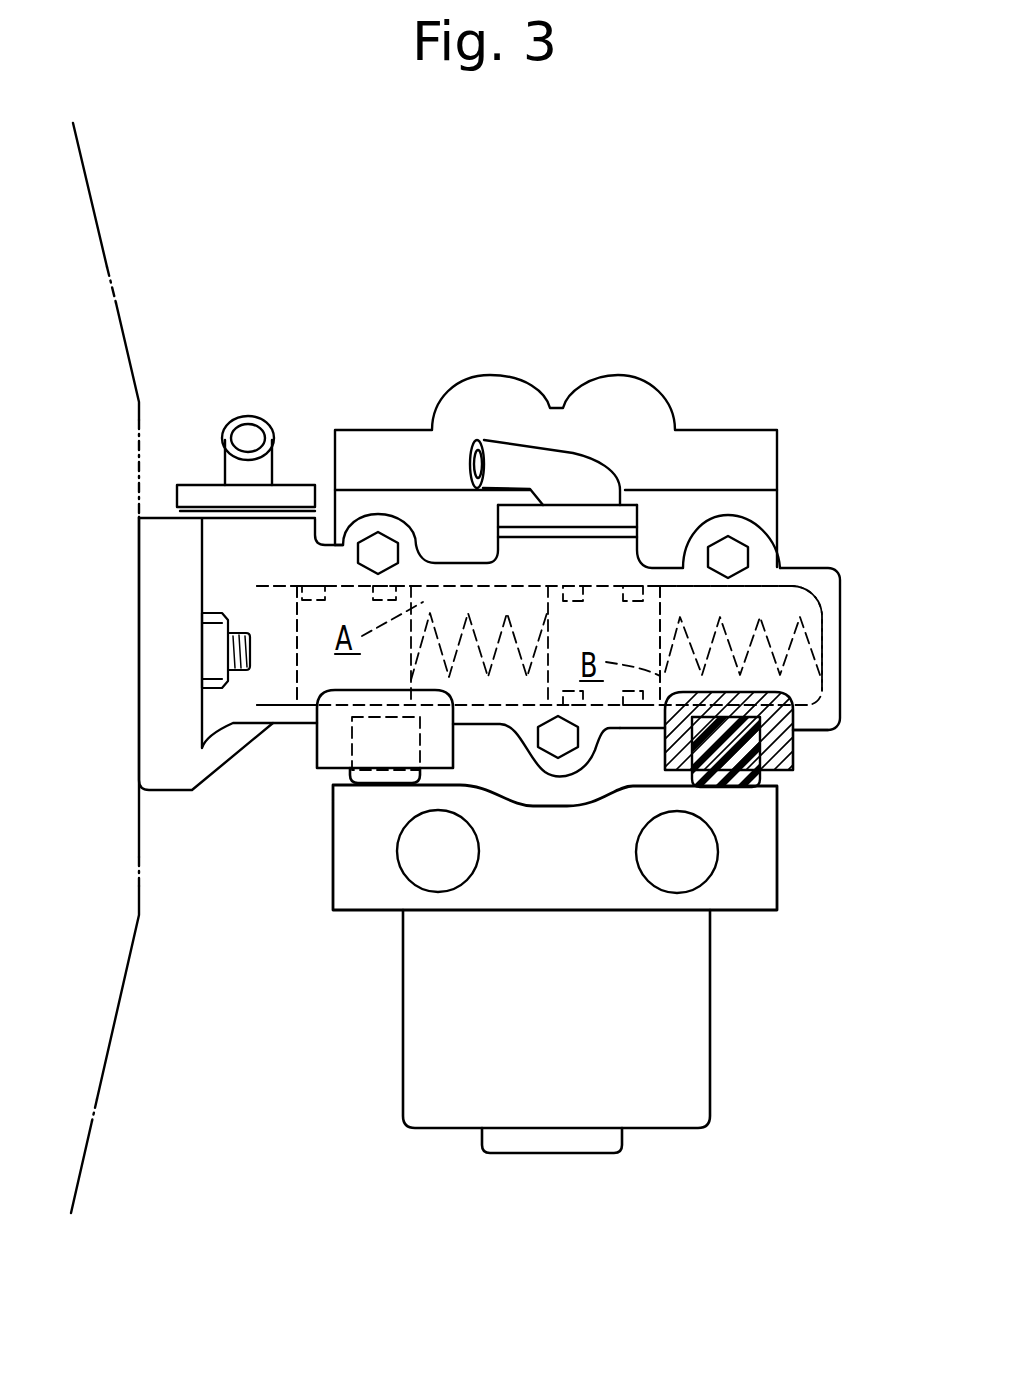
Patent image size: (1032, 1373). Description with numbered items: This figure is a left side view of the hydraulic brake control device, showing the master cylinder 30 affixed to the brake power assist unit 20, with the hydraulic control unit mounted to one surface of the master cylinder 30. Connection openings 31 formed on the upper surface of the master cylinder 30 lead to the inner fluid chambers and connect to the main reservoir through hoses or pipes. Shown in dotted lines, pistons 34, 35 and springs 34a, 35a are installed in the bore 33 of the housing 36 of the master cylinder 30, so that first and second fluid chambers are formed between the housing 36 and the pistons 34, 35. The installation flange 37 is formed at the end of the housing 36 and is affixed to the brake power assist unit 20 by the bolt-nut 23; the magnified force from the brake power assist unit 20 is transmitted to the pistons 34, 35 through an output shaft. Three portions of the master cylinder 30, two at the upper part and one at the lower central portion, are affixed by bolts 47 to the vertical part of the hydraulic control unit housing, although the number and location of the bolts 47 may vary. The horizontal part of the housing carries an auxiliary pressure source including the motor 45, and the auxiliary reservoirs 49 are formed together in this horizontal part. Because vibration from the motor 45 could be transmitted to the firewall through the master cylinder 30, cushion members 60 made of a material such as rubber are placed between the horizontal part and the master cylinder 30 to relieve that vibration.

The brake power assist unit 20 is at (110, 260).
The bolt-nut 23 is at (210, 622).
The master cylinder 30 is at (848, 575).
The connection opening 31 is at (583, 457).
The bore 33 is at (822, 613).
The piston 34 is at (297, 667).
The spring 34a is at (540, 648).
The piston 35 is at (660, 607).
The spring 35a is at (787, 672).
The housing 36 is at (840, 712).
The installation flange 37 is at (150, 758).
The motor 45 is at (702, 1062).
The bolt 47 is at (379, 545).
The auxiliary reservoir 49 is at (408, 867).
The cushion member 60 is at (350, 772).